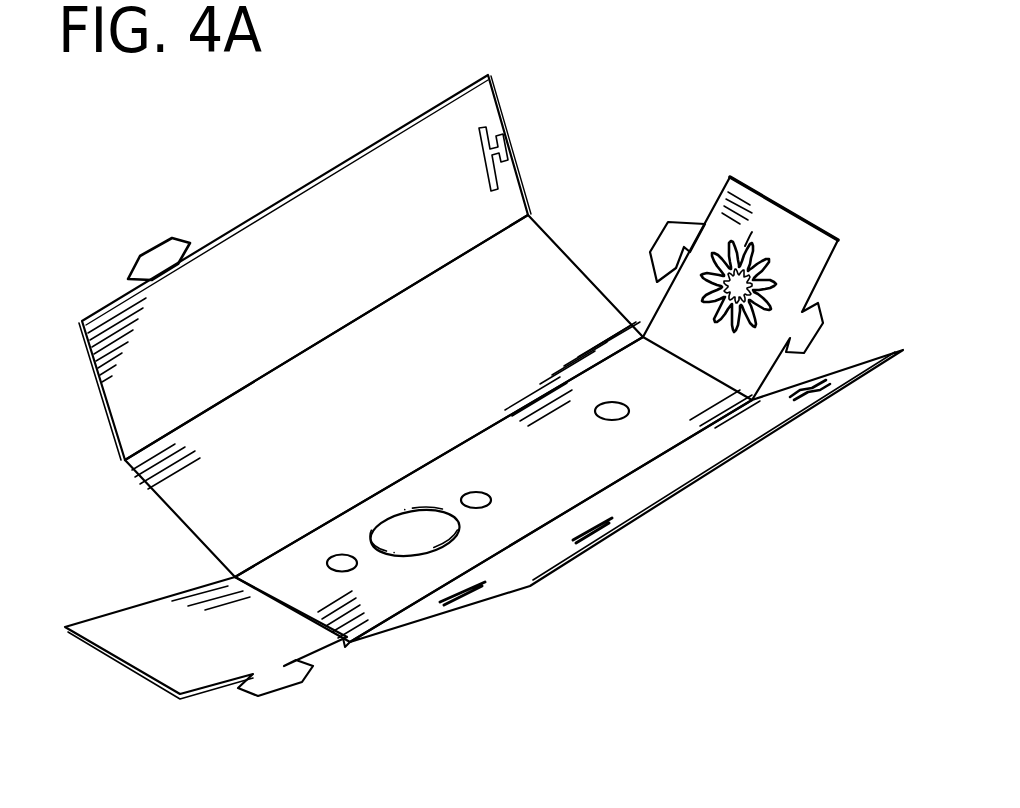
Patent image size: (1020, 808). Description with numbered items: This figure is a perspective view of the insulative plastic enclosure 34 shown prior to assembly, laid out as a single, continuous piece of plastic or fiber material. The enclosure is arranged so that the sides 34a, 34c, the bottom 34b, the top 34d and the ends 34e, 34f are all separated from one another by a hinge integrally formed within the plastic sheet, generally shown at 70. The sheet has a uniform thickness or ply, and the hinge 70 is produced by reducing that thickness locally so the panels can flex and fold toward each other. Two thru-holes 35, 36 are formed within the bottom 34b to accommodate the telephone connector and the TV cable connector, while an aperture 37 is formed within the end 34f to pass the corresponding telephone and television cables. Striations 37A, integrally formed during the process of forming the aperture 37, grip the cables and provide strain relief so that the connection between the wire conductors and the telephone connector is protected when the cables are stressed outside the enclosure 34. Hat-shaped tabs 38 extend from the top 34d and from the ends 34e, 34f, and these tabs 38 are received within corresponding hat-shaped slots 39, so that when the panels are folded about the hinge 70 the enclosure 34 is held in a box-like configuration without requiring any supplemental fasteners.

The insulative plastic enclosure 34 is at (484, 387).
The side 34a is at (730, 463).
The bottom 34b is at (573, 477).
The side 34c is at (410, 413).
The top 34d is at (394, 237).
The end 34e is at (228, 648).
The end 34f is at (755, 368).
The thru-hole 35 is at (458, 543).
The thru-hole 36 is at (630, 412).
The aperture 37 is at (775, 265).
The striations 37A is at (745, 245).
The hat-shaped tabs 38 is at (653, 242).
The hat-shaped slots 39 is at (503, 156).
The hinge 70 is at (352, 645).